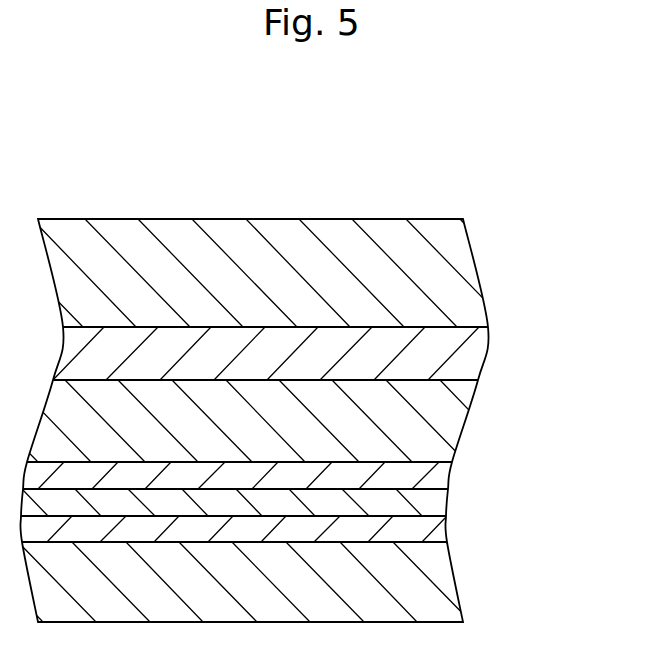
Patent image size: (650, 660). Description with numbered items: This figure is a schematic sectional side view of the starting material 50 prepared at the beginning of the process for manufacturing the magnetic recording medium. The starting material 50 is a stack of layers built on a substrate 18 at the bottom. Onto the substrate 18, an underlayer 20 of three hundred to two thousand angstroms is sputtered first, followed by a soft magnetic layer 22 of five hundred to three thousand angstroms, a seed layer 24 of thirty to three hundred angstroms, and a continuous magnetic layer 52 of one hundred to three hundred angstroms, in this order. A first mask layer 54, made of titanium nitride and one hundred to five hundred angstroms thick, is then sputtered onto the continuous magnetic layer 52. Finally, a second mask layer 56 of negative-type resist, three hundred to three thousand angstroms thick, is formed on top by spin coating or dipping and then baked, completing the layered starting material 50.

The starting material 50 is at (218, 158).
The second mask layer 56 is at (485, 268).
The first mask layer 54 is at (485, 348).
The continuous magnetic layer 52 is at (464, 418).
The seed layer 24 is at (448, 473).
The soft magnetic layer 22 is at (447, 500).
The underlayer 20 is at (443, 527).
The substrate 18 is at (453, 577).